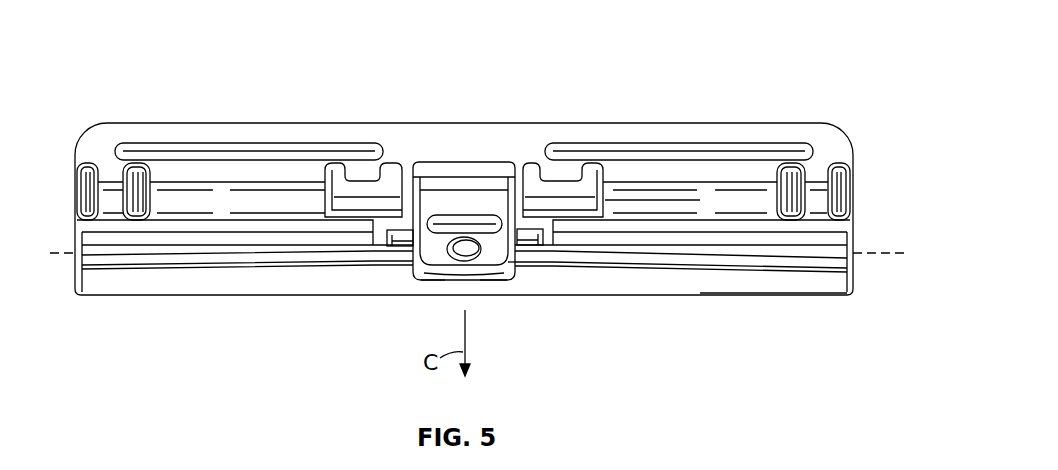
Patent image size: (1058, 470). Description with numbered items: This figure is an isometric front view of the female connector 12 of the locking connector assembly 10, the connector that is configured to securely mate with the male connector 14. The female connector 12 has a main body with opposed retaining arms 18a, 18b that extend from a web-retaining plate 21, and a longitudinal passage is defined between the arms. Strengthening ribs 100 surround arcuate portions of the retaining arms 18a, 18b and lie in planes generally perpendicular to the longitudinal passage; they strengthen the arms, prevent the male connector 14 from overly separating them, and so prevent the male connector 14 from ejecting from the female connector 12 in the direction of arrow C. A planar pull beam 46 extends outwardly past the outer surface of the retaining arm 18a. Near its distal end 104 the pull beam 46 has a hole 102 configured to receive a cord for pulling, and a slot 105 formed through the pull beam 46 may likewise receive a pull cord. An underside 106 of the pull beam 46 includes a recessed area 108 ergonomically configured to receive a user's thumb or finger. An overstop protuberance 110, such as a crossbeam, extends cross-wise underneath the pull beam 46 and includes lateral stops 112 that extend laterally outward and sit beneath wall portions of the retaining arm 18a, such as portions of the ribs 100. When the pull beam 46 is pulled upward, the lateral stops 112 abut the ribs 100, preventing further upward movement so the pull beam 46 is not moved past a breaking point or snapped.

The locking connector assembly 10 is at (149, 50).
The female connector 12 is at (401, 123).
The male connector 14 is at (195, 278).
The retaining arm 18a is at (658, 197).
The retaining arm 18b is at (792, 278).
The web-retaining plate 21 is at (863, 253).
The pull beam 46 is at (510, 280).
The strengthening ribs 100 is at (137, 165).
The hole 102 is at (473, 250).
The distal end 104 is at (423, 280).
The slot 105 is at (447, 227).
The underside 106 is at (430, 280).
The recessed area 108 is at (487, 280).
The overstop protuberance 110 is at (400, 213).
The lateral stops 112 is at (397, 240).